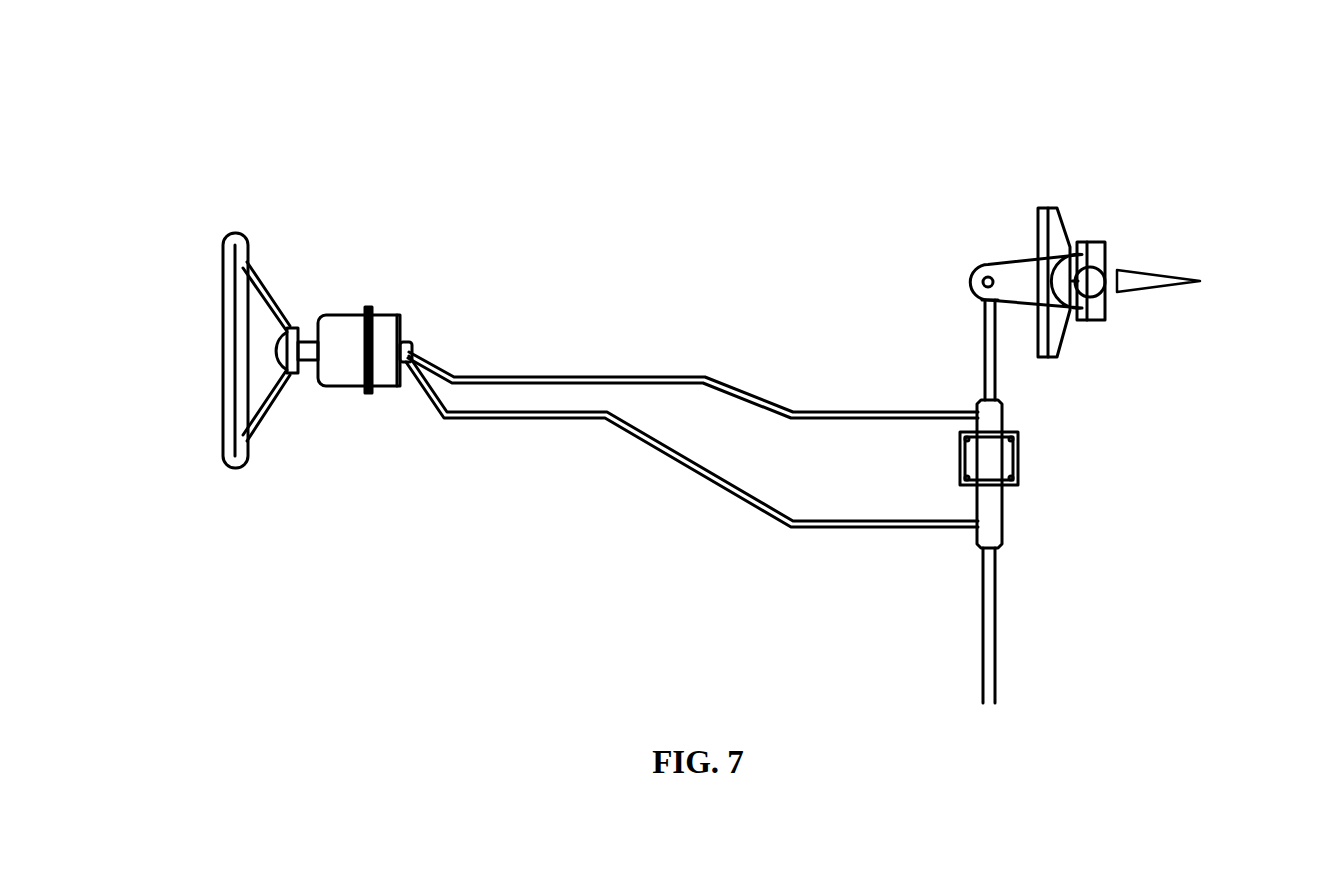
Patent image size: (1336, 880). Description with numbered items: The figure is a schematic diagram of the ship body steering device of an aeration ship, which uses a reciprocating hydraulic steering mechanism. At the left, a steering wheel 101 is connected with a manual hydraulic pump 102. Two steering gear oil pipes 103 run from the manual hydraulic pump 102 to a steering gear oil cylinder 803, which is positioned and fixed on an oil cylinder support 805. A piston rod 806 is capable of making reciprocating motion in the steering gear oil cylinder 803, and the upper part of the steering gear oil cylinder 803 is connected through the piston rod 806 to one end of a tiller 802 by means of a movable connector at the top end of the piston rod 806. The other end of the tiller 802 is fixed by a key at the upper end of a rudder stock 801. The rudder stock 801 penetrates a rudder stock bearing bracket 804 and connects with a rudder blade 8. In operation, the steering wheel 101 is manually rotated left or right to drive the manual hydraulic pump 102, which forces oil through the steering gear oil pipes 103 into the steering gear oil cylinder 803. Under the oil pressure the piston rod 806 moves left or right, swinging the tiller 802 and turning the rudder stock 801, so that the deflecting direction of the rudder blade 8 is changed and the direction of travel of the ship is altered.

The steering wheel 101 is at (206, 268).
The manual hydraulic pump 102 is at (348, 229).
The steering gear oil pipes 103 is at (677, 450).
The rudder blade 8 is at (1212, 179).
The rudder stock 801 is at (1130, 336).
The tiller 802 is at (1084, 215).
The steering gear oil cylinder 803 is at (924, 387).
The rudder stock bearing bracket 804 is at (1181, 379).
The oil cylinder support 805 is at (831, 277).
The piston rod 806 is at (1131, 454).